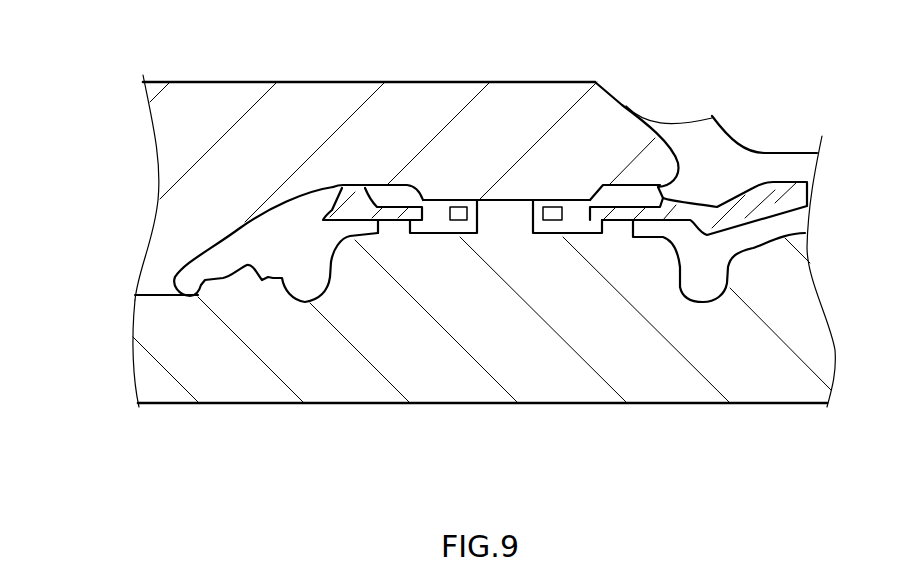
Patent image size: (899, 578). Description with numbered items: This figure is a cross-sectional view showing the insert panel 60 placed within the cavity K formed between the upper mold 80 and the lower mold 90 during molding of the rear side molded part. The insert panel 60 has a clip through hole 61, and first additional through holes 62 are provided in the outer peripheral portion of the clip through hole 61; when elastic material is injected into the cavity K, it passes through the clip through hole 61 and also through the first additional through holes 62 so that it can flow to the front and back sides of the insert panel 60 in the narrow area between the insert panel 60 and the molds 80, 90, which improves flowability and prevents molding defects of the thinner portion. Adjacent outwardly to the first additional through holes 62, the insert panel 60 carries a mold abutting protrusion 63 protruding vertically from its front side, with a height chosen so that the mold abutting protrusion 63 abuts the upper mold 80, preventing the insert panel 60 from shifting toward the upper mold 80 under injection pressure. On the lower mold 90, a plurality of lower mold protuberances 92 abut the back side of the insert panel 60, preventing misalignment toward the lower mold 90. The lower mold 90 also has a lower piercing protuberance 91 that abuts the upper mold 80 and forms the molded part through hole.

The upper mold 80 is at (88, 147).
The lower mold 90 is at (89, 342).
The insert panel 60 is at (333, 212).
The clip through hole 61 is at (467, 216).
The first additional through hole 62 is at (480, 218).
The mold abutting protrusion 63 is at (342, 190).
The lower piercing protuberance 91 is at (503, 220).
The lower mold protuberance 92 is at (393, 240).
The cavity K is at (280, 248).